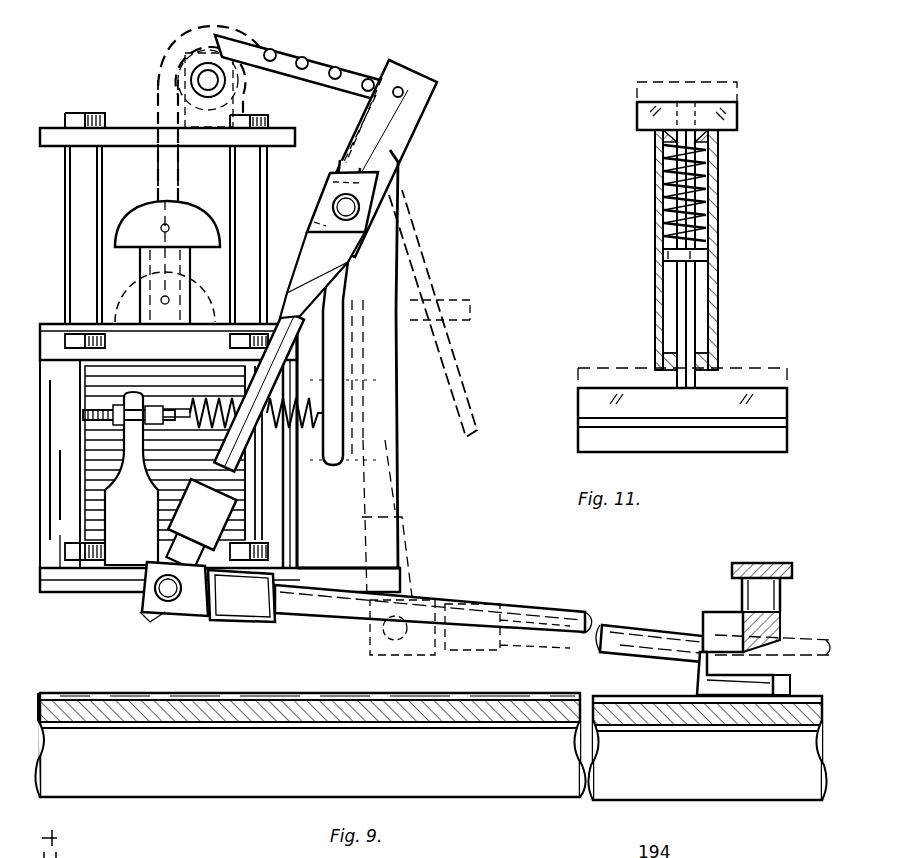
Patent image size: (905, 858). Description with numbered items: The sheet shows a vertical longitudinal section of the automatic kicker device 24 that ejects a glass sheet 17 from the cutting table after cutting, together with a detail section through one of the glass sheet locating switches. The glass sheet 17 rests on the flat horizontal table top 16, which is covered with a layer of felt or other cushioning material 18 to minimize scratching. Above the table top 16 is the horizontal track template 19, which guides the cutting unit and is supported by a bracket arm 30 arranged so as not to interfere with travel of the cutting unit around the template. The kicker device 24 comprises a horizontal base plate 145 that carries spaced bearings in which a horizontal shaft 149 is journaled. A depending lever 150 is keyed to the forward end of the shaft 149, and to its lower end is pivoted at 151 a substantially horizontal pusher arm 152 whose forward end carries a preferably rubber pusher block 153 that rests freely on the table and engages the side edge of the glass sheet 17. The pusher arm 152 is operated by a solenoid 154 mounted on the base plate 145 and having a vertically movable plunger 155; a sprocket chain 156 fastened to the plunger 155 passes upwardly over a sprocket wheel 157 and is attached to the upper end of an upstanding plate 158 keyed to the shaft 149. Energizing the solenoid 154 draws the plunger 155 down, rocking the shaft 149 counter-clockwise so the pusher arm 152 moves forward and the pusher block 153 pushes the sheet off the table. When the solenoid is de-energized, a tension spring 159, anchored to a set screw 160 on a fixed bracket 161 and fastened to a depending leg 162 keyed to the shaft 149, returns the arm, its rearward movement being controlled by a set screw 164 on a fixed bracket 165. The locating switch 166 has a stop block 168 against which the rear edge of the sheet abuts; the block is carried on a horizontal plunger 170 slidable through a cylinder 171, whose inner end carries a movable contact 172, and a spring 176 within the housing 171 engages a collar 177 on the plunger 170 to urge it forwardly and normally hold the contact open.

In FIG. 9, the table top 16 is at (210, 725).
In FIG. 9, the glass sheet 17 is at (780, 692).
In FIG. 9, the cushioning material 18 is at (214, 697).
In FIG. 9, the track template 19 is at (780, 551).
In FIG. 9, the kicker device 24 is at (398, 248).
In FIG. 9, the bracket arm 30 is at (722, 612).
In FIG. 9, the base plate 145 is at (88, 588).
In FIG. 9, the shaft 149 is at (378, 200).
In FIG. 9, the depending lever 150 is at (362, 482).
In FIG. 9, the pivot 151 is at (166, 606).
In FIG. 9, the pusher arm 152 is at (548, 612).
In FIG. 9, the pusher block 153 is at (700, 683).
In FIG. 9, the solenoid 154 is at (95, 376).
In FIG. 9, the plunger 155 is at (208, 300).
In FIG. 9, the sprocket chain 156 is at (288, 58).
In FIG. 9, the sprocket wheel 157 is at (240, 84).
In FIG. 9, the upstanding plate 158 is at (400, 133).
In FIG. 9, the tension spring 159 is at (194, 396).
In FIG. 9, the set screw 160 is at (102, 418).
In FIG. 9, the fixed bracket 161 is at (131, 478).
In FIG. 9, the depending leg 162 is at (343, 353).
In FIG. 9, the set screw 164 is at (300, 330).
In FIG. 9, the fixed bracket 165 is at (315, 396).
In FIG. 11, the contact switch 166 is at (724, 167).
In FIG. 11, the stop block 168 is at (767, 392).
In FIG. 11, the plunger 170 is at (690, 217).
In FIG. 11, the cylinder 171 is at (657, 172).
In FIG. 11, the movable contact 172 is at (738, 120).
In FIG. 11, the spring 176 is at (706, 190).
In FIG. 11, the collar 177 is at (663, 256).